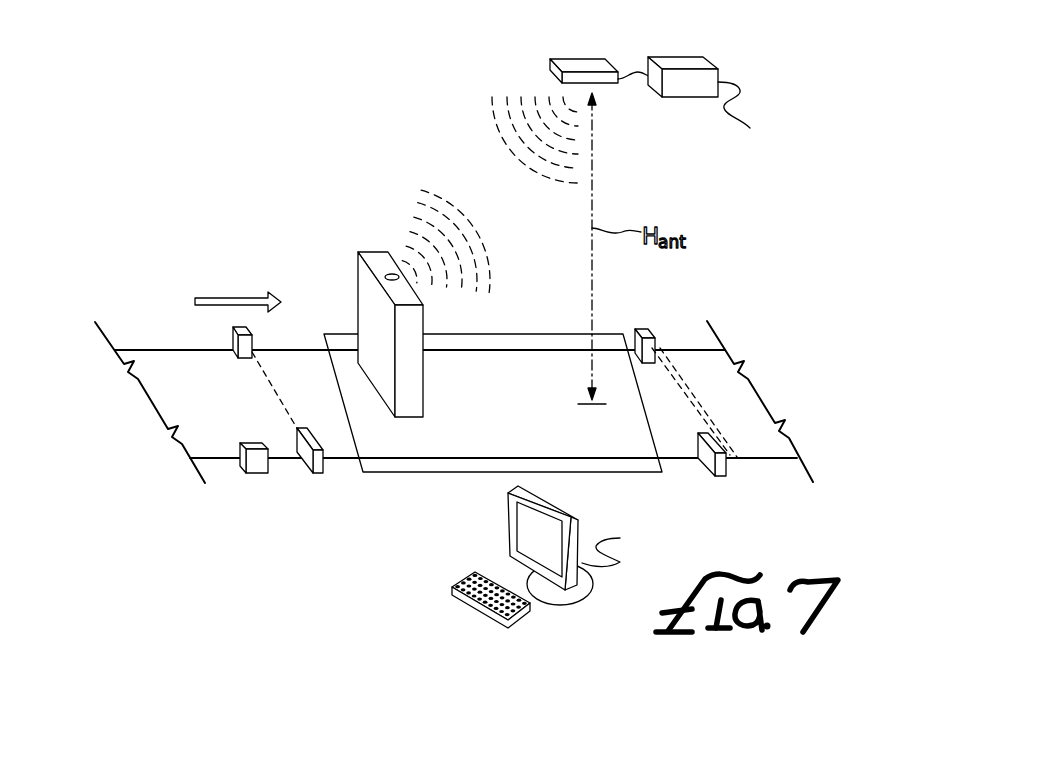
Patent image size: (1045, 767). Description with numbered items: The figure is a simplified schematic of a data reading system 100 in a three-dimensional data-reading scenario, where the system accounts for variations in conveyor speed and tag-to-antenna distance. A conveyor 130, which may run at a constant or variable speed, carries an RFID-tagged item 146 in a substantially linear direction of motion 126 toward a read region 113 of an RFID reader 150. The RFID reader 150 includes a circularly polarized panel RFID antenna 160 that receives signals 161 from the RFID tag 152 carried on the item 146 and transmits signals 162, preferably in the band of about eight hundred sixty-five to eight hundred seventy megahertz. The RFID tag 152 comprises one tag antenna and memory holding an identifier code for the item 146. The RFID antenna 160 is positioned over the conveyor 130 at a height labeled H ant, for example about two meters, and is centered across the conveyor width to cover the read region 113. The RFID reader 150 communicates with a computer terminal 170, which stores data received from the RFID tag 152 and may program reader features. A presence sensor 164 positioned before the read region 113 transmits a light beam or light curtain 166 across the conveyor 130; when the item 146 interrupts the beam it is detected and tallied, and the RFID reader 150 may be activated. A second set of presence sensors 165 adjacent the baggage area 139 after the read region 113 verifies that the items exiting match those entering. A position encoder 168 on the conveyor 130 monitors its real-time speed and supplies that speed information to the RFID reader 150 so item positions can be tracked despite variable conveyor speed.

The data reading system 100 is at (192, 152).
The read region 113 is at (515, 408).
The direction of motion 126 is at (236, 298).
The conveyor 130 is at (175, 372).
The baggage area 139 is at (735, 416).
The RFID-tagged item 146 is at (370, 307).
The RFID reader 150 is at (680, 62).
The RFID tag 152 is at (392, 275).
The circularly polarized panel RFID antenna 160 is at (578, 63).
The signals from the RFID tag 161 is at (450, 206).
The transmitted signals 162 is at (543, 175).
The presence sensor 164 is at (316, 466).
The second set of presence sensors 165 is at (720, 470).
The light beam or light curtain 166 is at (278, 396).
The position encoder 168 is at (262, 466).
The computer terminal 170 is at (535, 538).